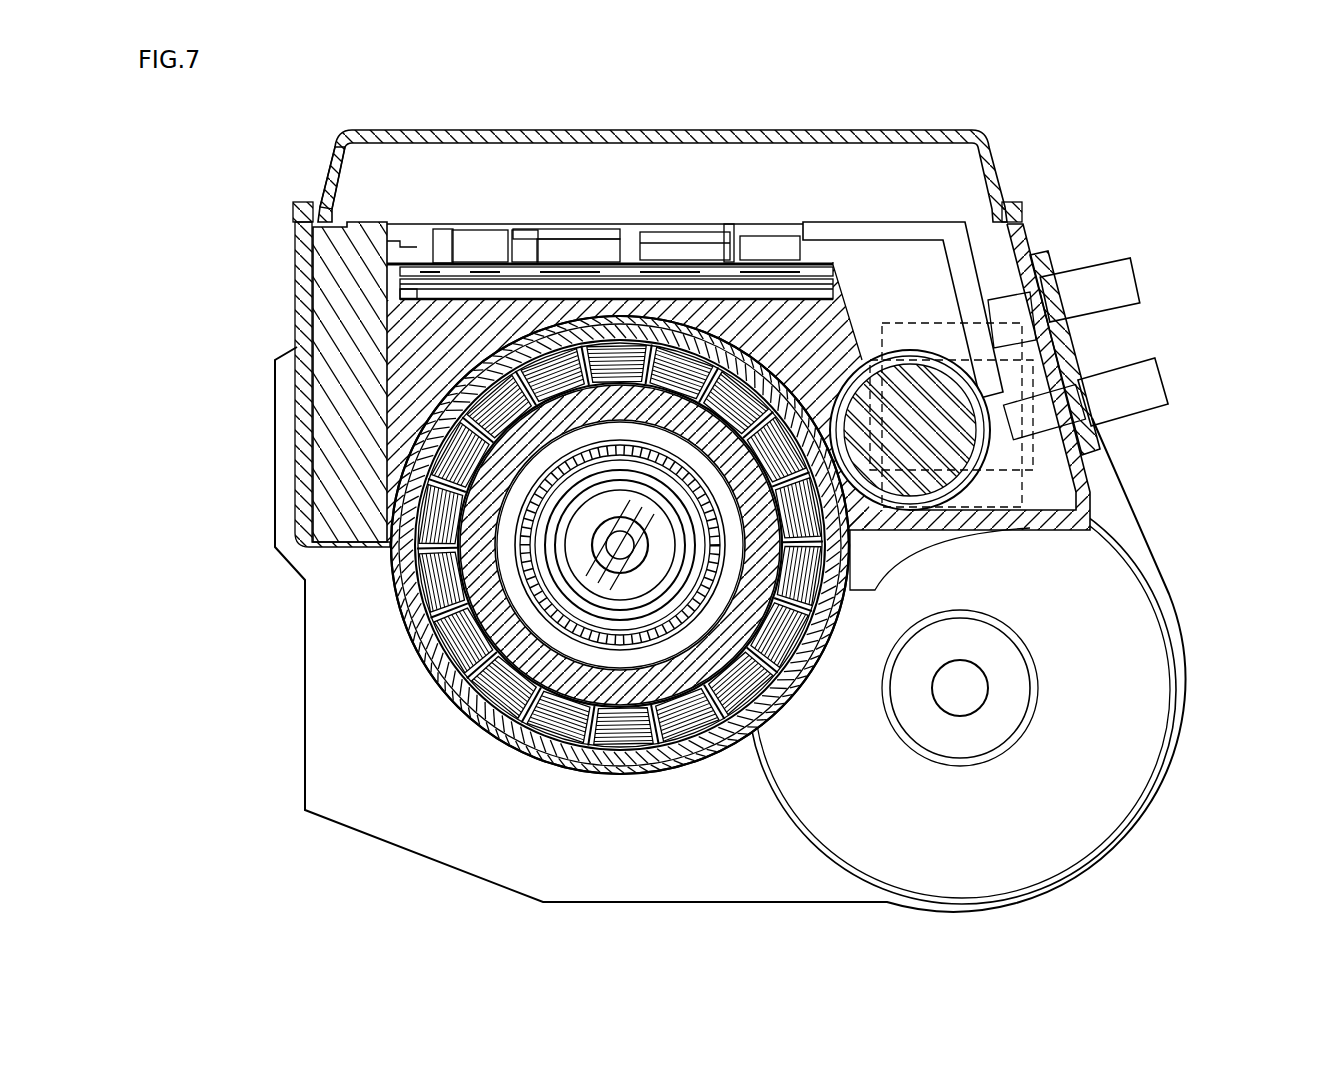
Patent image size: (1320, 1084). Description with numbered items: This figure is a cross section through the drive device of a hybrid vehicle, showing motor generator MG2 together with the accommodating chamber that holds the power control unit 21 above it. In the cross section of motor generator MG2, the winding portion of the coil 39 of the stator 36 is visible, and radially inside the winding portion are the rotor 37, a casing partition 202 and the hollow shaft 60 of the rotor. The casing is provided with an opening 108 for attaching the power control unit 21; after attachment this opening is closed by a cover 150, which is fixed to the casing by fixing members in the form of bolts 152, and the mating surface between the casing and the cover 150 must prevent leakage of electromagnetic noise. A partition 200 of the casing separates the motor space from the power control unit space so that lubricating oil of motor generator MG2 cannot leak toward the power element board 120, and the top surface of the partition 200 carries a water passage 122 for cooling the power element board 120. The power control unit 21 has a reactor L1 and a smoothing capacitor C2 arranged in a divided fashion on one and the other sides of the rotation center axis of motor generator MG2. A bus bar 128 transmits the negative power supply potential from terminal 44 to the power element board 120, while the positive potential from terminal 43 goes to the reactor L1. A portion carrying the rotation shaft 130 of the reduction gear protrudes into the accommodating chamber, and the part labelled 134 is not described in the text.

The smoothing capacitor C2 is at (334, 208).
The power control unit 21 is at (529, 214).
The power element board 120 is at (697, 268).
The water passage 122 is at (787, 297).
The rotation shaft of the reduction gear 130 is at (843, 372).
The bus bar 128 is at (914, 221).
The cover 150 is at (966, 130).
The bolts 152 is at (293, 213).
The opening 108 is at (318, 285).
The partition 200 is at (385, 440).
The casing partition 202 is at (550, 550).
The hollow shaft 60 is at (510, 575).
The motor generator MG2 is at (540, 631).
The rotor 37 is at (552, 772).
The stator 36 is at (612, 773).
The coil 39 is at (636, 772).
The terminal 43 is at (1138, 285).
The terminal 44 is at (1162, 380).
The reactor L1 is at (1038, 452).
The shaft 134 is at (988, 690).